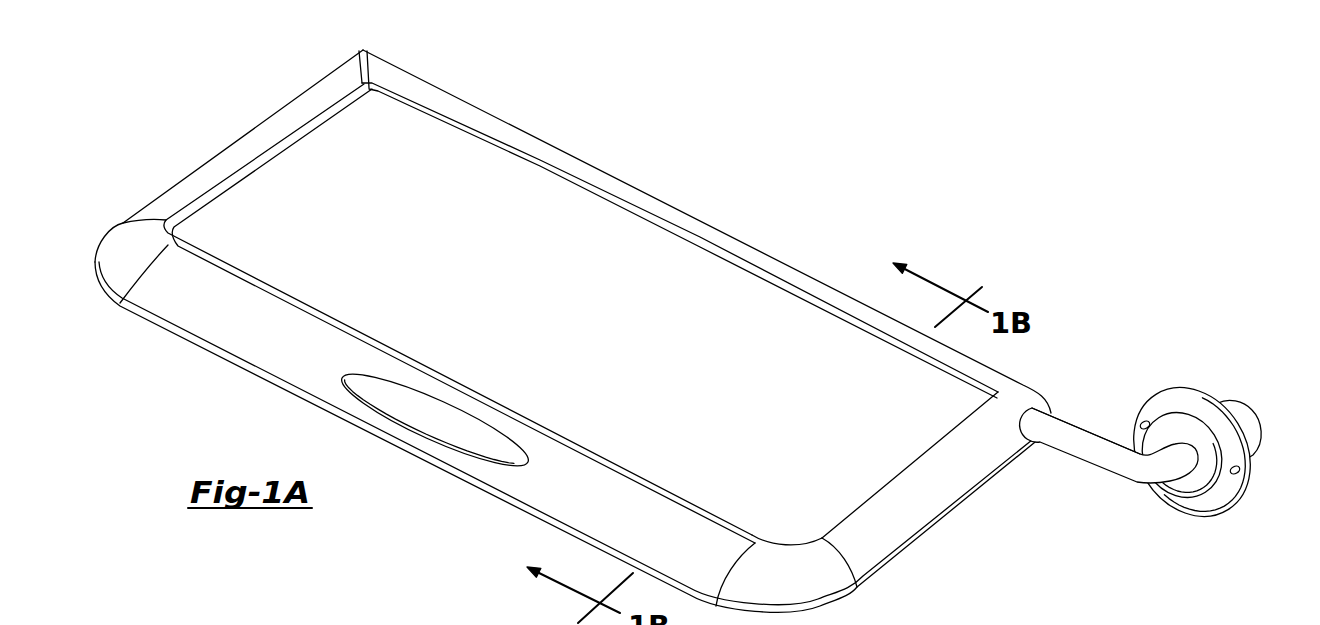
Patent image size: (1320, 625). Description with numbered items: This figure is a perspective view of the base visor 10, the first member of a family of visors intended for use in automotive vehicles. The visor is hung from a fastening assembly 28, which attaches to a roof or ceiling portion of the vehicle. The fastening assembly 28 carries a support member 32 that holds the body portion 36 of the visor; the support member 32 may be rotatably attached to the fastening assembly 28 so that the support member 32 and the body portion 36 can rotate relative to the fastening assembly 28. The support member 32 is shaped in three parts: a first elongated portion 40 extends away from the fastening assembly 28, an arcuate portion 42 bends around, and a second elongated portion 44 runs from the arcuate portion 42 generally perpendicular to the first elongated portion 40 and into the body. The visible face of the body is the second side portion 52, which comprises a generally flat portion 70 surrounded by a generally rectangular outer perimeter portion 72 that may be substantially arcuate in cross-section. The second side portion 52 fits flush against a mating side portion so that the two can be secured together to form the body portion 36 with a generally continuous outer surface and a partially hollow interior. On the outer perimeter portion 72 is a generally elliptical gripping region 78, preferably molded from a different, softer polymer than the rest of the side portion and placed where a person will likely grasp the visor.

The base visor 10 is at (768, 185).
The fastening assembly 28 is at (1222, 532).
The support member 32 is at (1062, 452).
The body portion 36 is at (377, 460).
The first elongated portion 40 is at (1243, 413).
The arcuate portion 42 is at (1140, 477).
The second elongated portion 44 is at (1063, 427).
The second side portion 52 is at (613, 270).
The generally flat portion 70 is at (755, 357).
The outer perimeter portion 72 is at (771, 265).
The gripping region 78 is at (483, 450).